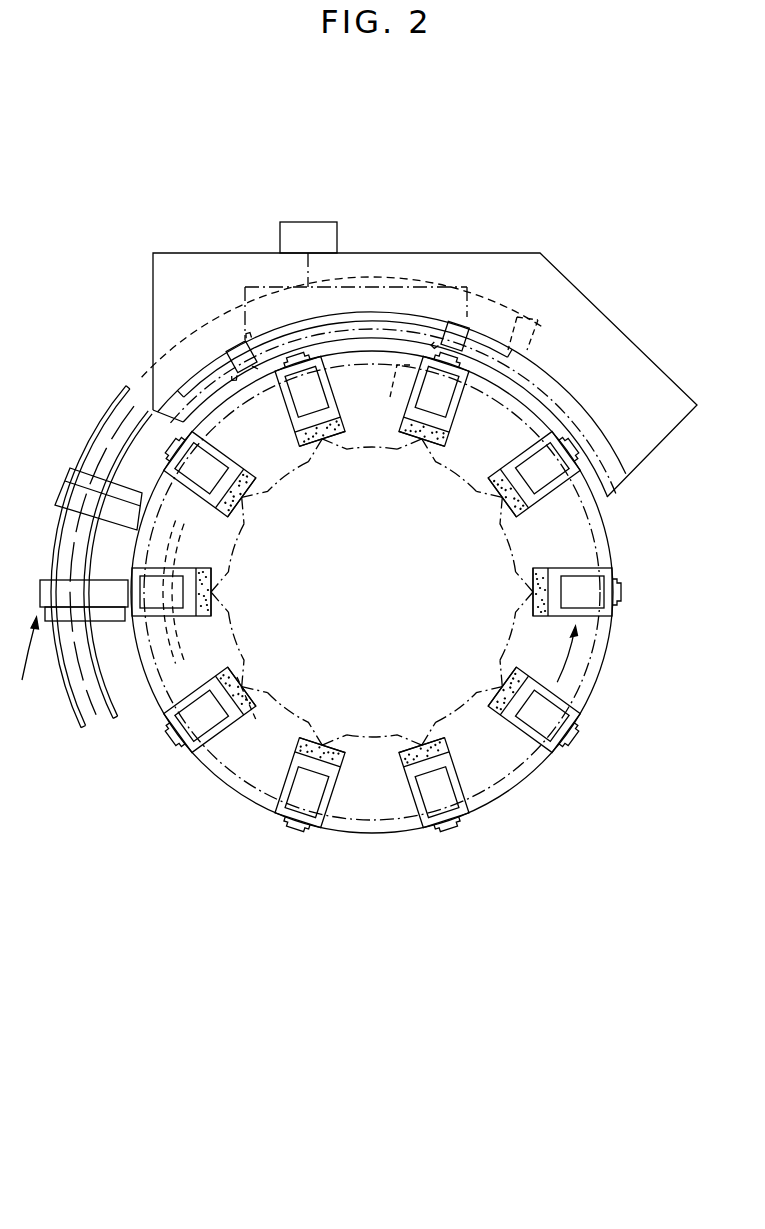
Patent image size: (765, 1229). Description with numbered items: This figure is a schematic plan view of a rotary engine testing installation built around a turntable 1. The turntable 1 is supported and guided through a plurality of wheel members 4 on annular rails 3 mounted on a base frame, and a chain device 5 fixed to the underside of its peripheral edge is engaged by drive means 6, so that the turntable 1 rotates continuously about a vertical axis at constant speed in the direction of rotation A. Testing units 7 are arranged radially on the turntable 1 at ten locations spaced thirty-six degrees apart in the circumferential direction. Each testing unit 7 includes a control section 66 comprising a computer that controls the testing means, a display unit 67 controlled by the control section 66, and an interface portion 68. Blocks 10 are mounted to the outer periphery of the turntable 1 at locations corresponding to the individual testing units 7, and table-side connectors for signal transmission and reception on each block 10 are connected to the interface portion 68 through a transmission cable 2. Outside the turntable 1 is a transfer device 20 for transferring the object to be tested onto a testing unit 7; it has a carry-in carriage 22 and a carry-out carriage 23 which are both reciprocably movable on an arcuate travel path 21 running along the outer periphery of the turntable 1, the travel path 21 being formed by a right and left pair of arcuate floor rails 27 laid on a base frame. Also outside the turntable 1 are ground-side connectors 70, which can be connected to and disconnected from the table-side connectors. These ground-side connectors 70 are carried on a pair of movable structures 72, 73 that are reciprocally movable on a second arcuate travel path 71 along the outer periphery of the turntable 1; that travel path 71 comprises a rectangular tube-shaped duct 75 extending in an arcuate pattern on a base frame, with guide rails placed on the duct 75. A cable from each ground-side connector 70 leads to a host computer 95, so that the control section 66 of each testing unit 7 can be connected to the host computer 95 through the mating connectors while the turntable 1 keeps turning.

The turntable 1 is at (515, 760).
The transmission cable 2 is at (240, 566).
The annular rails 3 is at (232, 753).
The wheel members 4 is at (180, 657).
The chain device 5 is at (500, 422).
The drive means 6 is at (540, 403).
The testing units 7 is at (333, 437).
The blocks 10 is at (405, 613).
The transfer device 20 is at (80, 566).
The arcuate travel path 21 is at (117, 430).
The carry-in carriage 22 is at (105, 582).
The carry-out carriage 23 is at (60, 495).
The arcuate floor rails 27 is at (82, 707).
The control section 66 is at (227, 513).
The display unit 67 is at (242, 473).
The interface portion 68 is at (412, 443).
The ground-side connectors 70 is at (256, 370).
The arcuate travel path 71 is at (347, 317).
The movable structure 72 is at (227, 357).
The movable structure 73 is at (438, 323).
The rectangular tube-shaped duct 75 is at (273, 333).
The host computer 95 is at (308, 236).
The direction of rotation A is at (573, 664).